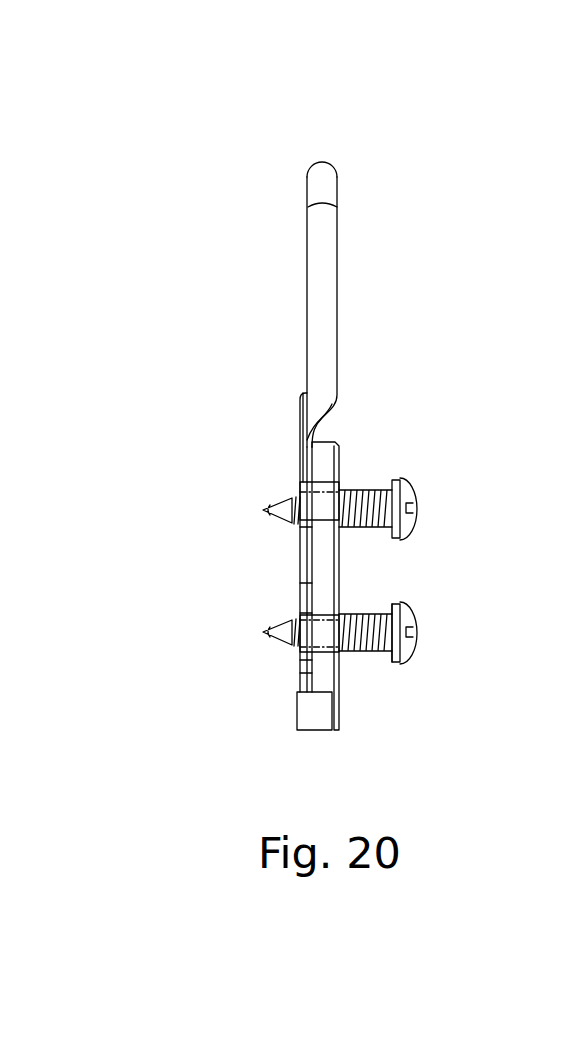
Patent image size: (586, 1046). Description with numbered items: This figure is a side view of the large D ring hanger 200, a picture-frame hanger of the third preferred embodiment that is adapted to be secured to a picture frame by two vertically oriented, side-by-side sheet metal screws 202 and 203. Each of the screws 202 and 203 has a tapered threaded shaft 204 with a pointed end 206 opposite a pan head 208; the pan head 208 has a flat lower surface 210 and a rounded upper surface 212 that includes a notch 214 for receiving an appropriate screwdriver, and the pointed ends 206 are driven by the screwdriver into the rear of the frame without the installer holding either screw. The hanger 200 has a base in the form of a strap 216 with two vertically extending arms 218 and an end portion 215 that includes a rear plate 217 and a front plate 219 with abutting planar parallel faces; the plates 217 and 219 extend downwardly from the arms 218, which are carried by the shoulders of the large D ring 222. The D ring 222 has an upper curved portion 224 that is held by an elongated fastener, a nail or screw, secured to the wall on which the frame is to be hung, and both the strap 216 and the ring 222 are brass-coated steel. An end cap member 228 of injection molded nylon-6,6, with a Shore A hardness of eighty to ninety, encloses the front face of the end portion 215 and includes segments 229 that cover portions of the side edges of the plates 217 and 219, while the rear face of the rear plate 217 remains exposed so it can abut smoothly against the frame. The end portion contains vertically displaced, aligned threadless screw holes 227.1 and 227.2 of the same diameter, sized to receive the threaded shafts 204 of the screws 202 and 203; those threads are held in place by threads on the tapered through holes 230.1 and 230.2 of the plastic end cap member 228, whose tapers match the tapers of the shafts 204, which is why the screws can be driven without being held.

The large D ring hanger 200 is at (212, 340).
The sheet metal screw 202 is at (412, 488).
The sheet metal screw 203 is at (420, 622).
The tapered threaded shaft 204 is at (370, 492).
The pointed end 206 is at (273, 503).
The pan head 208 is at (418, 530).
The flat lower surface 210 is at (397, 535).
The rounded upper surface 212 is at (420, 515).
The notch 214 is at (408, 506).
The end portion 215 is at (298, 542).
The strap 216 is at (300, 423).
The rear plate 217 is at (308, 567).
The vertically extending arm 218 is at (300, 402).
The front plate 219 is at (313, 583).
The large D ring 222 is at (317, 280).
The upper curved portion 224 is at (322, 172).
The threadless screw hole 227.1 is at (300, 492).
The threadless screw hole 227.2 is at (300, 648).
The end cap member 228 is at (297, 660).
The segment 229 is at (307, 502).
The tapered through hole 230.1 is at (327, 520).
The tapered through hole 230.2 is at (322, 655).